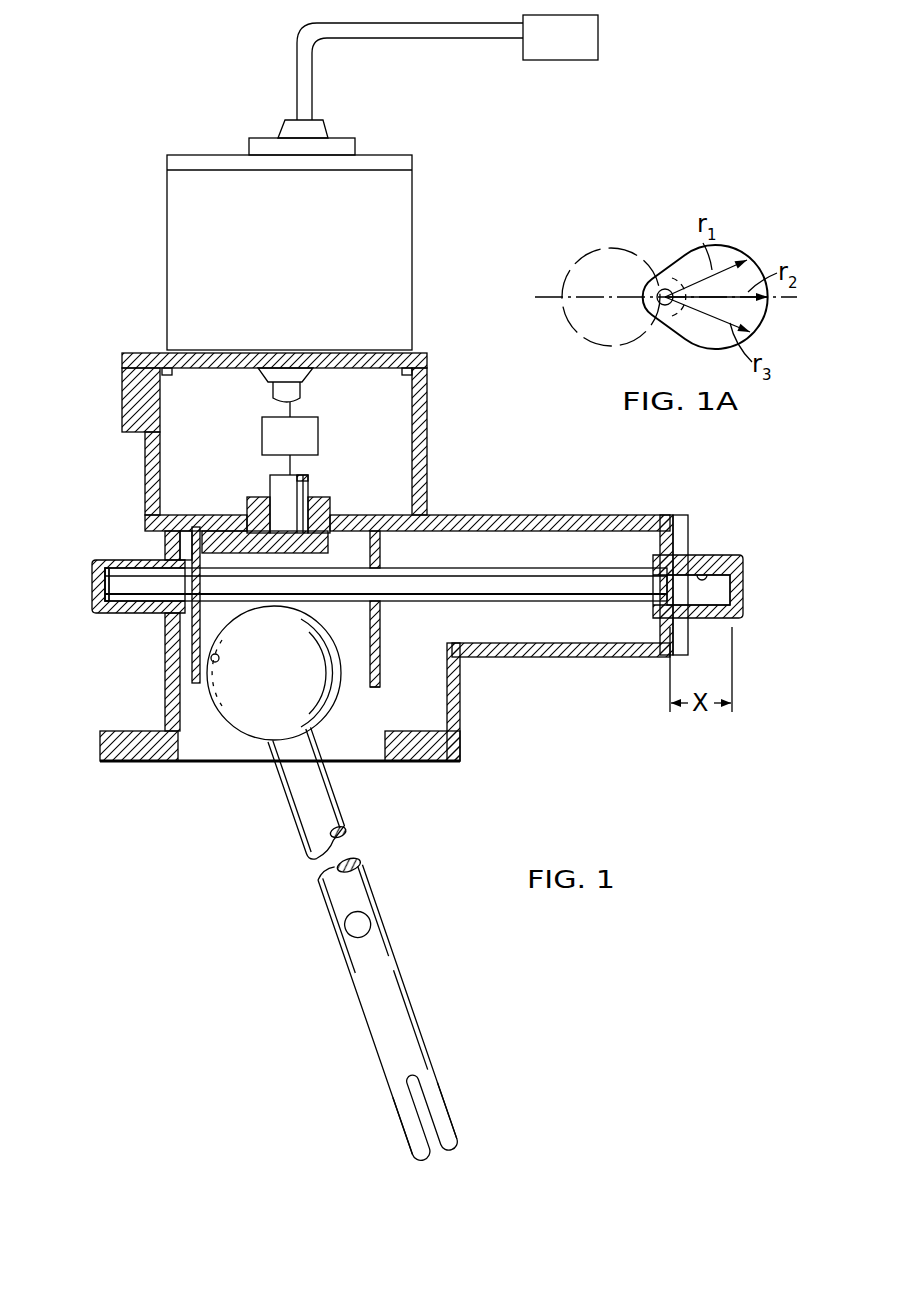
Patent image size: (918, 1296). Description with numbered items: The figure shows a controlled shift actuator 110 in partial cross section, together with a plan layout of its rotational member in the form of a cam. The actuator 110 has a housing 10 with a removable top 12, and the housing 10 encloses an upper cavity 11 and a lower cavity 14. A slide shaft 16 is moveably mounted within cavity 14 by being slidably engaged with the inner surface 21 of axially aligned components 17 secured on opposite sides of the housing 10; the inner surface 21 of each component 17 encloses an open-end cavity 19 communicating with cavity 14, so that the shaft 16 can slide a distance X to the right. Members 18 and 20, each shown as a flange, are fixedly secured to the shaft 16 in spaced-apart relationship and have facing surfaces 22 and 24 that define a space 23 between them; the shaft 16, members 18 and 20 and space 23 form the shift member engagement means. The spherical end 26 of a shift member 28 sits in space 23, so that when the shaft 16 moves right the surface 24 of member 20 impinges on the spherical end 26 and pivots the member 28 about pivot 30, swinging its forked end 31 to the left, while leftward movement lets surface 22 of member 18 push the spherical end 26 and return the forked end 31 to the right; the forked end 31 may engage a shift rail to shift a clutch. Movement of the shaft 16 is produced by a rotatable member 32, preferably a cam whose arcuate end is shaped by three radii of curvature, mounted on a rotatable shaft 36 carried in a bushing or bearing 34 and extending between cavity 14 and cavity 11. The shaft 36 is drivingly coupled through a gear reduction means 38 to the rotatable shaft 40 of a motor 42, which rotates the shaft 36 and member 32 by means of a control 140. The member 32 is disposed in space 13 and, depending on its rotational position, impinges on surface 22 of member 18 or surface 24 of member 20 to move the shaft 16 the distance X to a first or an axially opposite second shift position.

In FIG. 1, the housing 10 is at (420, 398).
In FIG. 1, the cavity 11 is at (393, 455).
In FIG. 1, the removable top 12 is at (418, 352).
In FIG. 1, the space 13 is at (362, 552).
In FIG. 1, the cavity 14 is at (513, 563).
In FIG. 1, the slide shaft 16 is at (583, 580).
In FIG. 1, the axially aligned components 17 is at (128, 557).
In FIG. 1, the member 18 is at (380, 657).
In FIG. 1, the open-end cavity 19 is at (727, 590).
In FIG. 1, the member 20 is at (192, 633).
In FIG. 1, the inner surface 21 is at (107, 605).
In FIG. 1, the facing surface 22 is at (363, 690).
In FIG. 1, the space 23 is at (348, 650).
In FIG. 1, the facing surface 24 is at (214, 660).
In FIG. 1, the spherical end 26 is at (265, 730).
In FIG. 1, the shift member 28 is at (333, 815).
In FIG. 1, the pivot 30 is at (370, 922).
In FIG. 1, the forked end 31 is at (442, 1122).
In FIG. 1, the rotatable member 32 is at (325, 543).
In FIG. 1A, the rotatable member 32 is at (762, 255).
In FIG. 1, the bushing or bearing 34 is at (313, 486).
In FIG. 1, the rotatable shaft 36 is at (282, 488).
In FIG. 1A, the rotatable shaft 36 is at (665, 283).
In FIG. 1, the gear reduction means 38 is at (272, 437).
In FIG. 1, the rotatable shaft 40 is at (272, 390).
In FIG. 1, the motor 42 is at (403, 202).
In FIG. 1, the actuator 110 is at (150, 302).
In FIG. 1, the control 140 is at (550, 62).